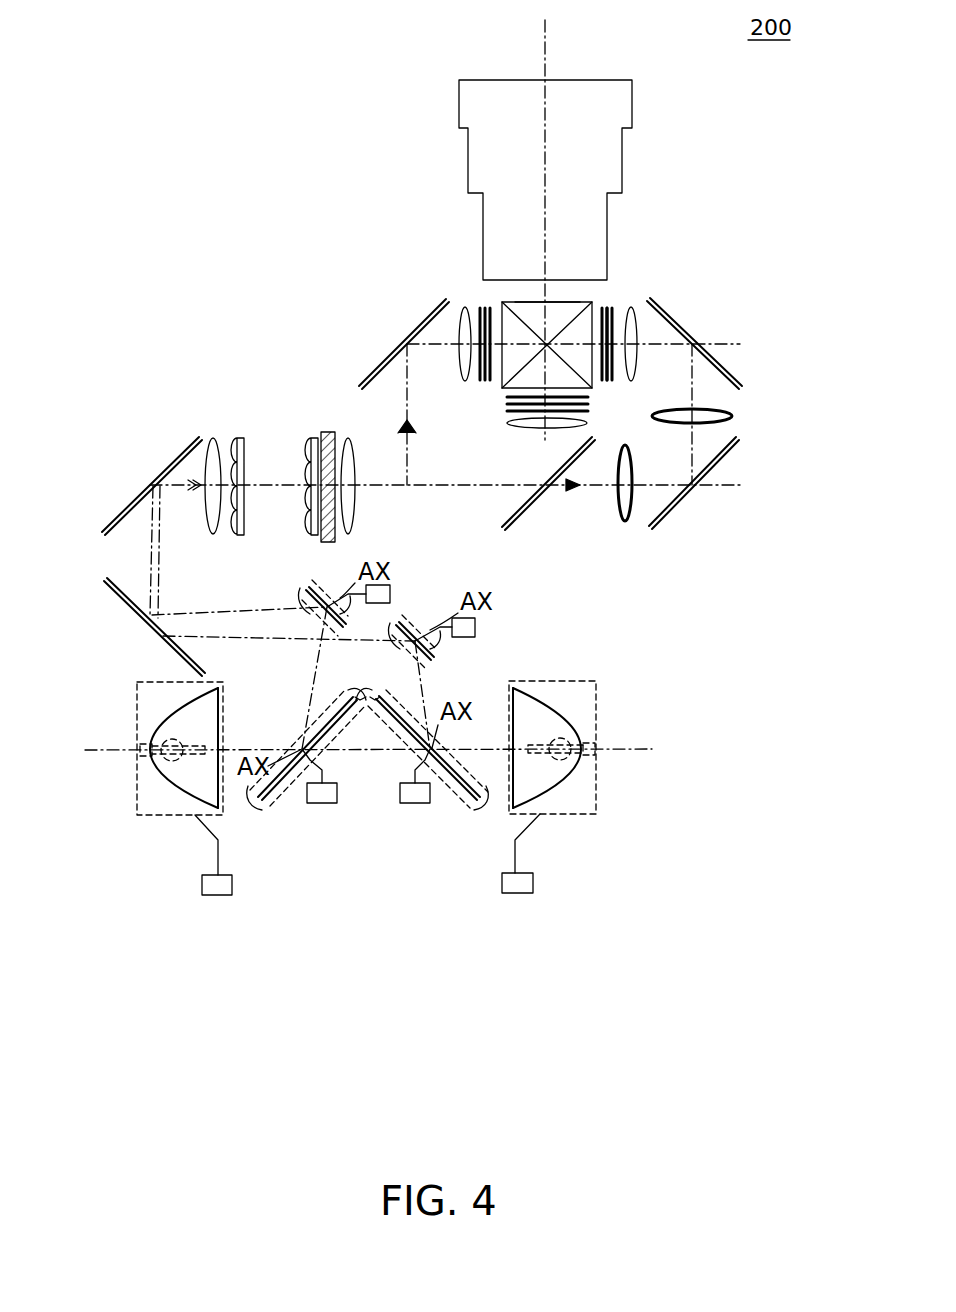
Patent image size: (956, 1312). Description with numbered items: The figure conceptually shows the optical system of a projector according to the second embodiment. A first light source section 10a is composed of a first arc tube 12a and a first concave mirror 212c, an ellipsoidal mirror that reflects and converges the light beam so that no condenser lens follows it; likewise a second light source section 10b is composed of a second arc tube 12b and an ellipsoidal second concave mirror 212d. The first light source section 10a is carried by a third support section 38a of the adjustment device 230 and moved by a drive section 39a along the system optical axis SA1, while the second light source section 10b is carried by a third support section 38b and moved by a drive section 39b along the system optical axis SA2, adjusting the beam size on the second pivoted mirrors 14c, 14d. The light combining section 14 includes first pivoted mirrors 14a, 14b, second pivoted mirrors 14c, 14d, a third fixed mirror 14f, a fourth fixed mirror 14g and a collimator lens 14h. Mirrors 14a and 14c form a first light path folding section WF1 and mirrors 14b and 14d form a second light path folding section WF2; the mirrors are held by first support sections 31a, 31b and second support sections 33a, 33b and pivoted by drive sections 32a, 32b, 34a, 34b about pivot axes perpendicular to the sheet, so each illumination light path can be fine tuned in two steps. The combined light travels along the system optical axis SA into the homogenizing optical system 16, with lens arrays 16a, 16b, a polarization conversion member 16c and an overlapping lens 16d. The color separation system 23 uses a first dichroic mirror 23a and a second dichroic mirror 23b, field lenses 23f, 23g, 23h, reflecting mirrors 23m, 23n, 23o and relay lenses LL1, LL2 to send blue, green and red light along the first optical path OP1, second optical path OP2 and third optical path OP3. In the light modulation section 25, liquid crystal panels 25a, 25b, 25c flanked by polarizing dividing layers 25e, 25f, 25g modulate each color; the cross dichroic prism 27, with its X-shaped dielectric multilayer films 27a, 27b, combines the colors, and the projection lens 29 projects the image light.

The projection lens 29 is at (500, 157).
The cross dichroic prism 27 is at (568, 296).
The dielectric multilayer film 27a is at (585, 305).
The dielectric multilayer film 27b is at (480, 306).
The light modulation section 25 is at (468, 296).
The liquid crystal panel 25a is at (440, 360).
The liquid crystal panel 25b is at (507, 398).
The liquid crystal panel 25c is at (636, 335).
The polarizing dividing layers 25e is at (486, 380).
The polarizing dividing layers 25f is at (590, 405).
The polarizing dividing layers 25g is at (607, 381).
The color separation system 23 is at (708, 495).
The first dichroic mirror 23a is at (385, 510).
The second dichroic mirror 23b is at (528, 500).
The field lens 23f is at (460, 334).
The field lens 23g is at (520, 425).
The field lens 23h is at (640, 345).
The reflecting mirror 23m is at (375, 375).
The reflecting mirror 23n is at (720, 490).
The reflecting mirror 23o is at (725, 365).
The first lens LL1 is at (625, 522).
The second lens LL2 is at (735, 420).
The first optical path OP1 is at (407, 430).
The second optical path OP2 is at (548, 470).
The third optical path OP3 is at (692, 398).
The homogenizing optical system 16 is at (275, 383).
The lens array 16a is at (240, 438).
The lens array 16b is at (314, 438).
The polarization conversion member 16c is at (328, 432).
The overlapping lens 16d is at (348, 535).
The light combining section 14 is at (140, 562).
The first pivoted mirror 14a is at (275, 795).
The first pivoted mirror 14b is at (465, 798).
The second pivoted mirror 14c is at (306, 590).
The second pivoted mirror 14d is at (436, 650).
The third fixed mirror 14f is at (128, 608).
The fourth fixed mirror 14g is at (128, 508).
The collimator lens 14h is at (211, 438).
The system optical axis SA is at (270, 490).
The system optical axis SA1 is at (205, 612).
The system optical axis SA2 is at (268, 652).
The first support section 31a is at (372, 745).
The first support section 31b is at (366, 703).
The drive section 32a is at (322, 803).
The drive section 32b is at (415, 803).
The second support section 33a is at (327, 607).
The second support section 33b is at (415, 641).
The drive section 34a is at (390, 592).
The drive section 34b is at (475, 627).
The first light source section 10a is at (195, 865).
The second light source section 10b is at (500, 848).
The first arc tube 12a is at (165, 760).
The second arc tube 12b is at (565, 758).
The first concave mirror 212c is at (185, 810).
The second concave mirror 212d is at (542, 806).
The third support section 38a is at (178, 683).
The third support section 38b is at (555, 681).
The drive section 39a is at (218, 895).
The drive section 39b is at (515, 893).
The first light path folding section WF1 is at (298, 848).
The second light path folding section WF2 is at (420, 848).
The adjustment device 230 is at (360, 882).